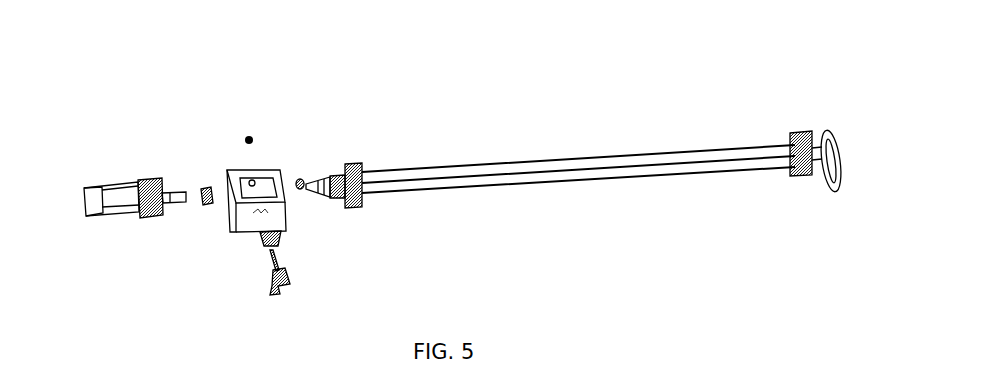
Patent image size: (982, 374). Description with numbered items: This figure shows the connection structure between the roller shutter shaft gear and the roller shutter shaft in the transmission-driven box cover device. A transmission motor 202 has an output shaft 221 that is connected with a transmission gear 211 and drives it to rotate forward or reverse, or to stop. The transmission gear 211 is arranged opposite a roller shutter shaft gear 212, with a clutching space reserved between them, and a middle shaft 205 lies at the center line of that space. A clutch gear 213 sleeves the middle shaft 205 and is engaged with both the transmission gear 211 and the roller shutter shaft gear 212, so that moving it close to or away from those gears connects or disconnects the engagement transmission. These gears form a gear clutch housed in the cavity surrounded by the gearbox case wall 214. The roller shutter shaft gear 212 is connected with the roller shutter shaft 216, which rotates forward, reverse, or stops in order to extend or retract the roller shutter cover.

The transmission motor 202 is at (148, 197).
The output shaft 221 is at (178, 196).
The transmission gear 211 is at (200, 207).
The clutch gear 213 is at (262, 238).
The gearbox case wall 214 is at (283, 174).
The middle shaft 205 is at (284, 257).
The roller shutter shaft gear 212 is at (305, 189).
The roller shutter shaft 216 is at (547, 163).